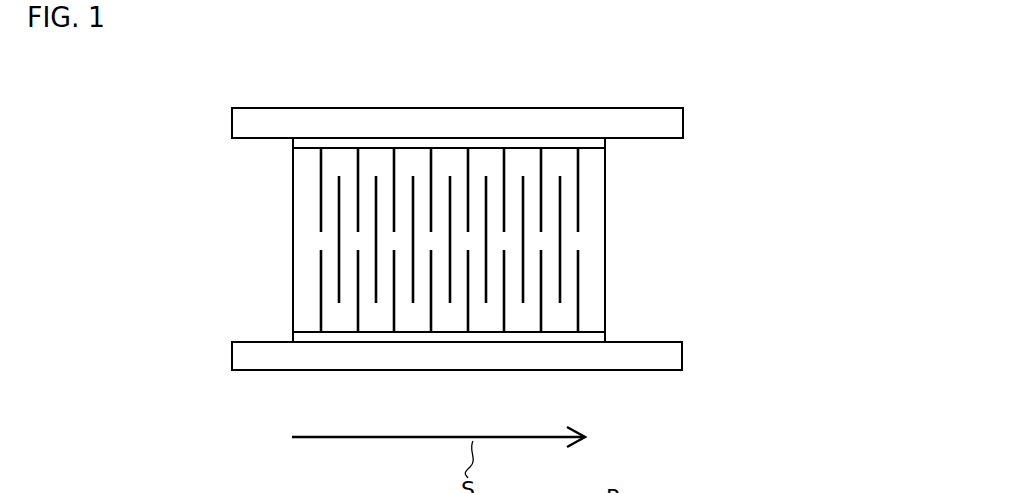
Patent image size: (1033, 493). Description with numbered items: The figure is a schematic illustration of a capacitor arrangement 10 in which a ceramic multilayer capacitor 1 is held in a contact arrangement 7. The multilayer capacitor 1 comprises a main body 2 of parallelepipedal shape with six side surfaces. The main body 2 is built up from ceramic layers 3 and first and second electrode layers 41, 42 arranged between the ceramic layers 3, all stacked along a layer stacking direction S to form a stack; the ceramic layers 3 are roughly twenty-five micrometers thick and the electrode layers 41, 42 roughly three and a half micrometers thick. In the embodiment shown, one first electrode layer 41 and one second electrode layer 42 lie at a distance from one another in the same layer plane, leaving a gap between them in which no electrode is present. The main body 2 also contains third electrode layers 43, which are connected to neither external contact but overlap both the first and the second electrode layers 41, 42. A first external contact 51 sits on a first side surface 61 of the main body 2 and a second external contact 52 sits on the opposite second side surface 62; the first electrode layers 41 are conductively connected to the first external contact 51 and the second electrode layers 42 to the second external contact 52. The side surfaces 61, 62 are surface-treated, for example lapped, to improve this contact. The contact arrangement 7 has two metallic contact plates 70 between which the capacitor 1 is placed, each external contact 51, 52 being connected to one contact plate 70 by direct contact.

The ceramic multilayer capacitor 1 is at (204, 232).
The main body 2 is at (293, 228).
The ceramic layers 3 is at (593, 315).
The contact arrangement 7 is at (636, 98).
The capacitor arrangement 10 is at (385, 47).
The first electrode layers 41 is at (320, 300).
The second electrode layers 42 is at (321, 190).
The third electrode layers 43 is at (339, 240).
The first external contact 51 is at (363, 337).
The second external contact 52 is at (523, 142).
The first side surface 61 is at (452, 358).
The second side surface 62 is at (422, 147).
The metallic contact plates 70 is at (673, 125).